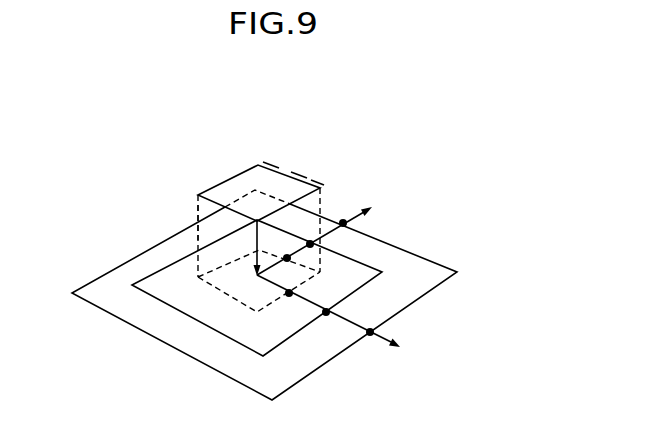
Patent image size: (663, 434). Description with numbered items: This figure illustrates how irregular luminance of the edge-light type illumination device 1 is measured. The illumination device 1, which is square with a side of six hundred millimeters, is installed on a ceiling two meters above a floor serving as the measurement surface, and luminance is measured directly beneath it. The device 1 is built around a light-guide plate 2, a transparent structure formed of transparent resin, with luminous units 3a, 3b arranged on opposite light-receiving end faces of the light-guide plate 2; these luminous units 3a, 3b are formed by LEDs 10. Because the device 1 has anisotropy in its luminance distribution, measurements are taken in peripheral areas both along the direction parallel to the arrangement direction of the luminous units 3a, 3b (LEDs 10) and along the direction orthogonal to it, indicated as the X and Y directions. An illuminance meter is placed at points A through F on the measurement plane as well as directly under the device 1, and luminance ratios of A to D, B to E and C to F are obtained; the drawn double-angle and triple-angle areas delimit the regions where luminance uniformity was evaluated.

The edge-light type illumination device 1 is at (305, 234).
The light-guide plate 2 is at (217, 188).
The luminous unit 3a is at (302, 168).
The luminous unit 3b is at (203, 216).
The LED 10 is at (230, 206).